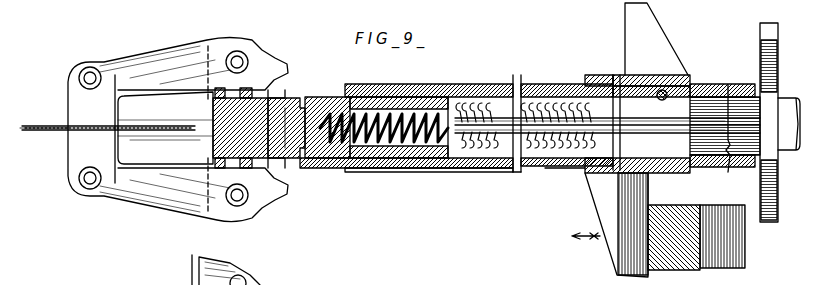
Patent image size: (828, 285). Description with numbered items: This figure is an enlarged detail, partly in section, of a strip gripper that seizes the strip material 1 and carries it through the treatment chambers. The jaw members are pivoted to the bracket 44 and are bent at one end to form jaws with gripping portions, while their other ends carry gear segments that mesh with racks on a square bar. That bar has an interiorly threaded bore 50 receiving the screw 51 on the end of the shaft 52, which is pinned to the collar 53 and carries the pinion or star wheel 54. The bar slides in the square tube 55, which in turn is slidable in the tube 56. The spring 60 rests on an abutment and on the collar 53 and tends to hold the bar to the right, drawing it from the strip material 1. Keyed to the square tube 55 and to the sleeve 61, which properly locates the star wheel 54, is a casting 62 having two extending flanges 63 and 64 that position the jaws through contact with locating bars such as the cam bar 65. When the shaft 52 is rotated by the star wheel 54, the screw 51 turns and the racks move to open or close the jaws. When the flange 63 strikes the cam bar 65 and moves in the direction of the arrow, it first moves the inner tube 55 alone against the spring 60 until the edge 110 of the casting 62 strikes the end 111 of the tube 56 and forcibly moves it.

The strip material 1 is at (44, 131).
The bracket 44 is at (212, 112).
The interiorly threaded bore 50 is at (346, 92).
The screw 51 is at (429, 79).
The shaft 52 is at (496, 88).
The collar 53 is at (610, 75).
The star wheel 54 is at (768, 78).
The square tube 55 is at (350, 168).
The tube 56 is at (414, 170).
The spring 60 is at (570, 100).
The sleeve 61 is at (706, 98).
The casting 62 is at (688, 72).
The flange 63 is at (605, 207).
The flange 64 is at (640, 28).
The cam bar 65 is at (684, 220).
The edge of casting 110 is at (582, 167).
The end of tube 111 is at (546, 170).